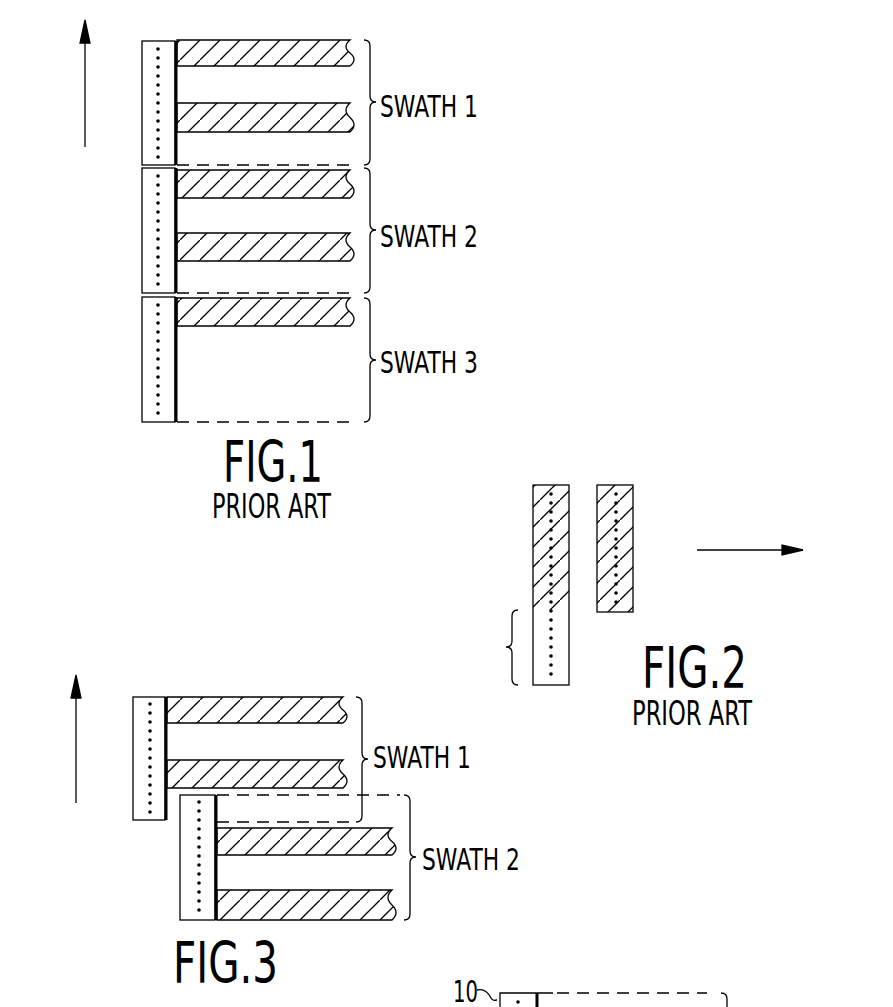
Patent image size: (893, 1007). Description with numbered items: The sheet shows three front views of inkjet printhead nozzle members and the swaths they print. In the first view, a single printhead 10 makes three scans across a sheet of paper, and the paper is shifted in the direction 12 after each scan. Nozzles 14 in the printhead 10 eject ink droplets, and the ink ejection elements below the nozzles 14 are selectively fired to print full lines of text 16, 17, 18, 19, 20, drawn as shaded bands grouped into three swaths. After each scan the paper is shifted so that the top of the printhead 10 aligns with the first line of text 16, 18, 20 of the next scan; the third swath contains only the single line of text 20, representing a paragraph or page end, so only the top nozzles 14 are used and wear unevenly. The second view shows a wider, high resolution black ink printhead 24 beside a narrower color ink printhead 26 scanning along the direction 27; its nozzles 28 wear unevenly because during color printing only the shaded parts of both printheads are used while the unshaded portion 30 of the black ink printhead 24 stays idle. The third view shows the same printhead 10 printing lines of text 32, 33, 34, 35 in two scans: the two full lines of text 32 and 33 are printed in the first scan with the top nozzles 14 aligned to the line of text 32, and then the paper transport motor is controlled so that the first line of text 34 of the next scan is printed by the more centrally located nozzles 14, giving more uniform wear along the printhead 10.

In FIG. 1, the printhead 10 is at (142, 45).
In FIG. 3, the printhead 10 is at (133, 702).
In FIG. 1, the direction 12 is at (85, 82).
In FIG. 3, the direction 12 is at (76, 740).
In FIG. 1, the nozzles 14 is at (158, 105).
In FIG. 3, the nozzles 14 is at (150, 760).
In FIG. 1, the line of text 16 is at (190, 66).
In FIG. 1, the line of text 17 is at (331, 103).
In FIG. 1, the line of text 18 is at (190, 198).
In FIG. 1, the line of text 19 is at (331, 233).
In FIG. 1, the line of text 20 is at (192, 326).
In FIG. 2, the black ink printhead 24 is at (533, 497).
In FIG. 2, the color ink printhead 26 is at (633, 501).
In FIG. 2, the direction 27 is at (734, 550).
In FIG. 2, the nozzles 28 is at (551, 522).
In FIG. 2, the unshaded portion 30 is at (497, 647).
In FIG. 3, the line of text 32 is at (185, 723).
In FIG. 3, the line of text 33 is at (330, 760).
In FIG. 3, the line of text 34 is at (378, 855).
In FIG. 3, the line of text 35 is at (232, 890).